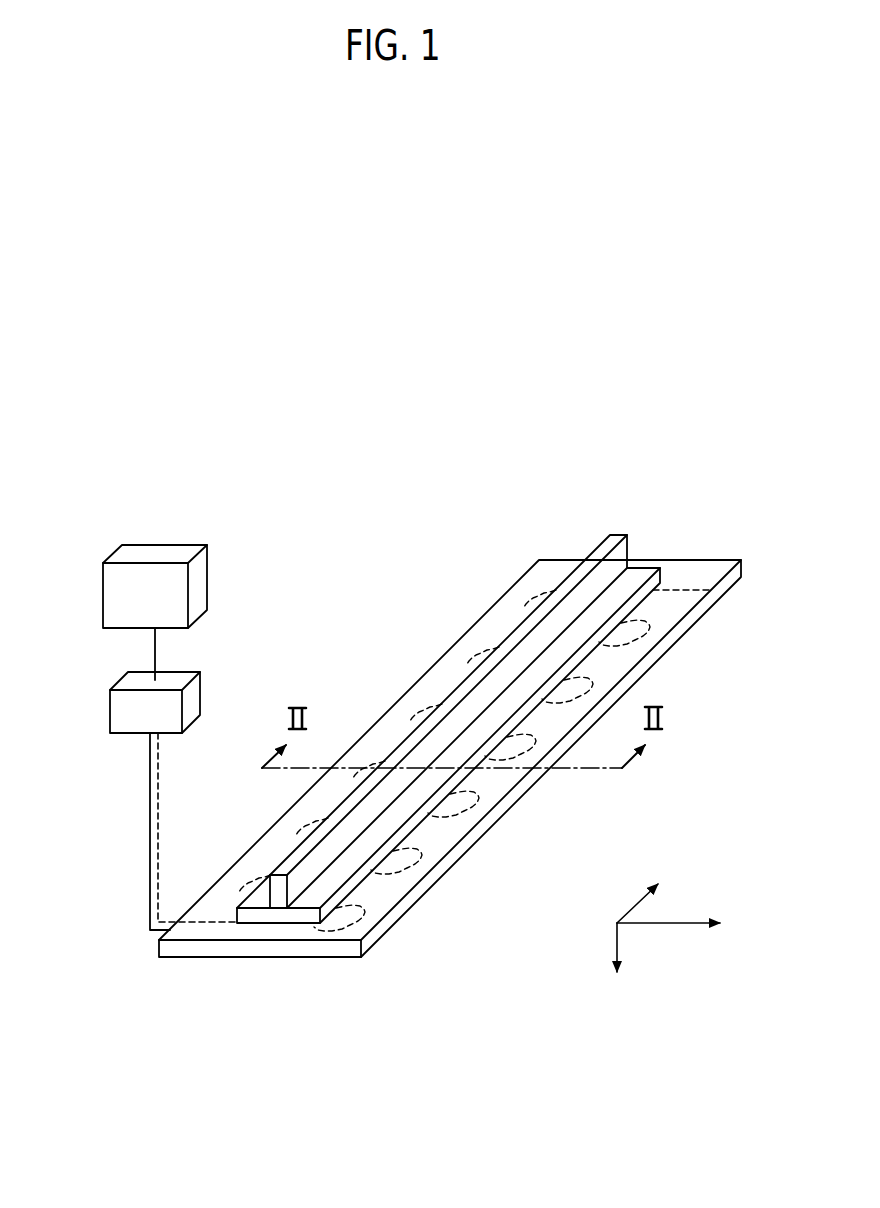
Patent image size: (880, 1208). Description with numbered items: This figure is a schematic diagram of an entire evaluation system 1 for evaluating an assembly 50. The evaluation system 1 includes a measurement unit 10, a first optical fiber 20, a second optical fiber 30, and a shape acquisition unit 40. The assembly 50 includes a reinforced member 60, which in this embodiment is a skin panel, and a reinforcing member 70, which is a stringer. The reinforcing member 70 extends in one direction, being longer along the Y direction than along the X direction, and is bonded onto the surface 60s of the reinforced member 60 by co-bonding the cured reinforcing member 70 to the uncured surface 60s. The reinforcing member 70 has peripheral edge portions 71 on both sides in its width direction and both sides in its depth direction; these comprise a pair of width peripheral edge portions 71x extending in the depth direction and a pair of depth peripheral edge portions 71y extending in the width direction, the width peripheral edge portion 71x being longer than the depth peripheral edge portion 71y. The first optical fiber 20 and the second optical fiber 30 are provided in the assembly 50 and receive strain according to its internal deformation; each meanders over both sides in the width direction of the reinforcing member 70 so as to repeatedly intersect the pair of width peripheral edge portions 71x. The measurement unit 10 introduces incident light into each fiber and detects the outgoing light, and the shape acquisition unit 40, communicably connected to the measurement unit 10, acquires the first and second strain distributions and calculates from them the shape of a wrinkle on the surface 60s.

The evaluation system 1 is at (315, 540).
The measurement unit 10 is at (117, 715).
The first optical fiber 20 is at (158, 815).
The second optical fiber 30 is at (148, 877).
The shape acquisition unit 40 is at (124, 535).
The assembly 50 is at (458, 570).
The reinforced member 60 is at (474, 758).
The surface of the reinforced member 60s is at (625, 660).
The reinforcing member 70 is at (595, 555).
The peripheral edge portions 71 is at (448, 812).
The width peripheral edge portions 71x is at (358, 877).
The depth peripheral edge portions 71y is at (282, 917).